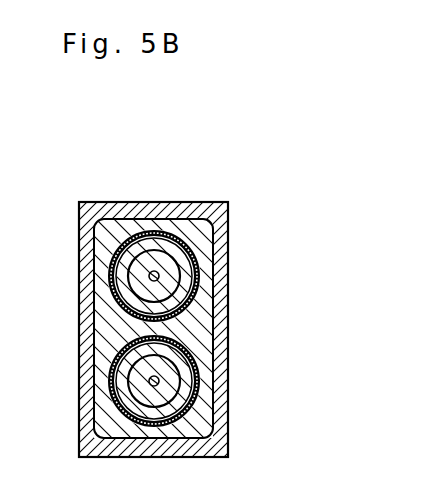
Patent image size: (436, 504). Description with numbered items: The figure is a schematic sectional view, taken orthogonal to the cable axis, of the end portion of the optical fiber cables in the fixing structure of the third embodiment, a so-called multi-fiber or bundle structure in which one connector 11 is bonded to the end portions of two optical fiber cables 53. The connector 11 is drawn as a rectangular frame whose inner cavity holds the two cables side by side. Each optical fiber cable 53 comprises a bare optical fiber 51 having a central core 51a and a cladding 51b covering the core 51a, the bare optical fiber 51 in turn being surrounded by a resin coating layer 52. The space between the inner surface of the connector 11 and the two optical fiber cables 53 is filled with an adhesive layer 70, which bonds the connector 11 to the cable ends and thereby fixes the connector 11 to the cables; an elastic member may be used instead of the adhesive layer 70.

The connector 11 is at (172, 208).
The bare optical fiber 51 is at (328, 418).
The core 51a is at (192, 413).
The cladding 51b is at (197, 397).
The resin coating layer 52 is at (167, 395).
The optical fiber cable 53 is at (182, 372).
The adhesive layer 70 is at (100, 416).